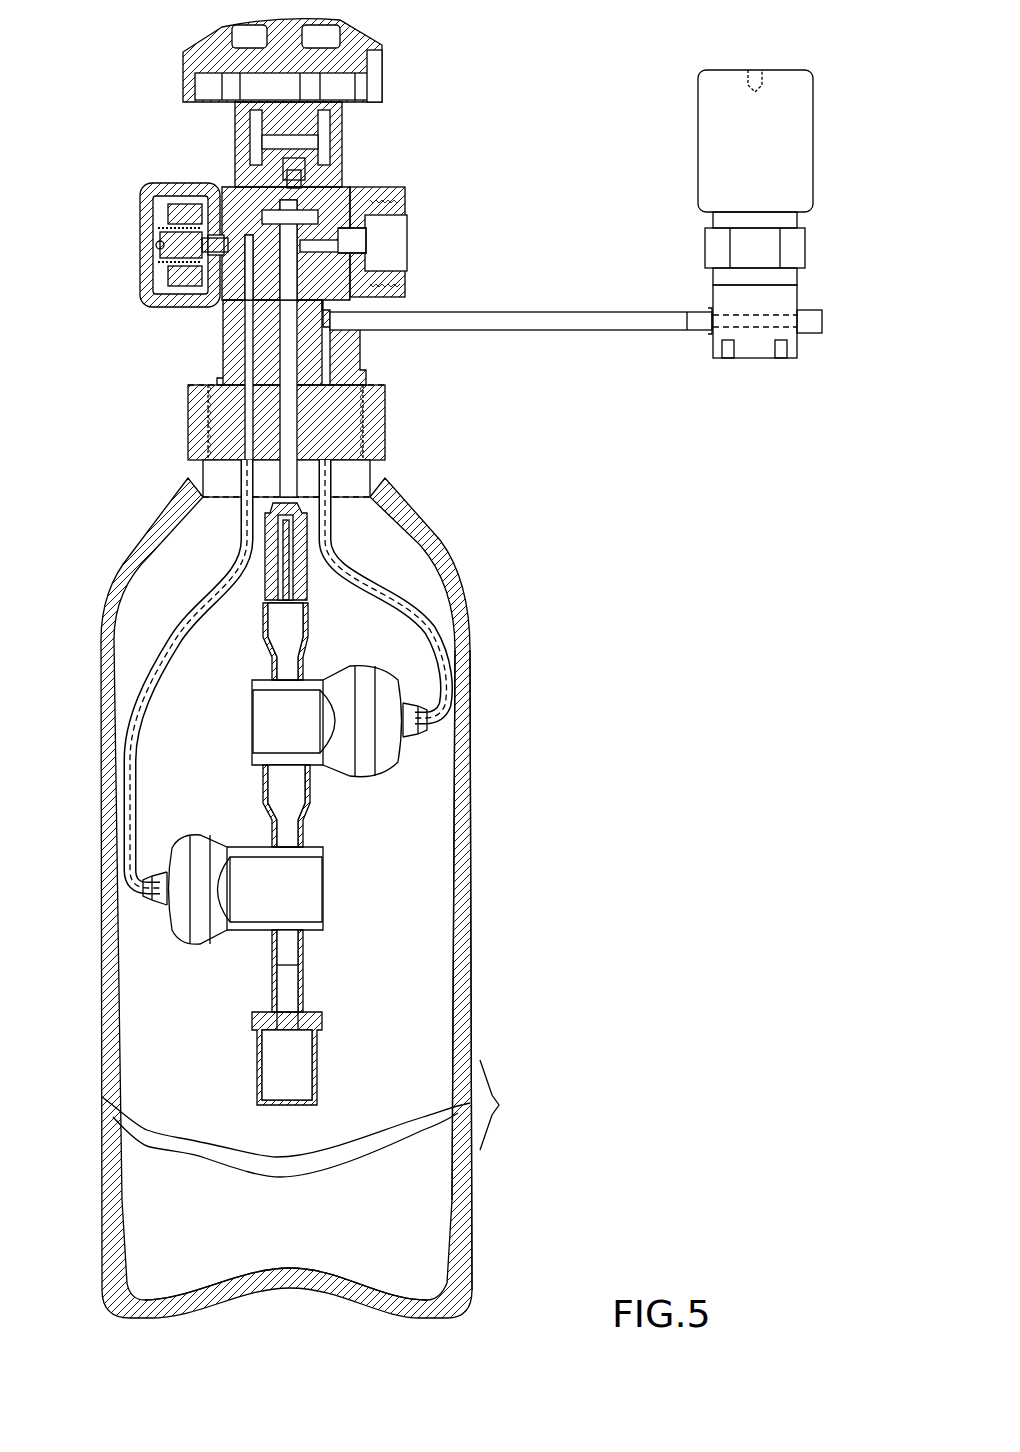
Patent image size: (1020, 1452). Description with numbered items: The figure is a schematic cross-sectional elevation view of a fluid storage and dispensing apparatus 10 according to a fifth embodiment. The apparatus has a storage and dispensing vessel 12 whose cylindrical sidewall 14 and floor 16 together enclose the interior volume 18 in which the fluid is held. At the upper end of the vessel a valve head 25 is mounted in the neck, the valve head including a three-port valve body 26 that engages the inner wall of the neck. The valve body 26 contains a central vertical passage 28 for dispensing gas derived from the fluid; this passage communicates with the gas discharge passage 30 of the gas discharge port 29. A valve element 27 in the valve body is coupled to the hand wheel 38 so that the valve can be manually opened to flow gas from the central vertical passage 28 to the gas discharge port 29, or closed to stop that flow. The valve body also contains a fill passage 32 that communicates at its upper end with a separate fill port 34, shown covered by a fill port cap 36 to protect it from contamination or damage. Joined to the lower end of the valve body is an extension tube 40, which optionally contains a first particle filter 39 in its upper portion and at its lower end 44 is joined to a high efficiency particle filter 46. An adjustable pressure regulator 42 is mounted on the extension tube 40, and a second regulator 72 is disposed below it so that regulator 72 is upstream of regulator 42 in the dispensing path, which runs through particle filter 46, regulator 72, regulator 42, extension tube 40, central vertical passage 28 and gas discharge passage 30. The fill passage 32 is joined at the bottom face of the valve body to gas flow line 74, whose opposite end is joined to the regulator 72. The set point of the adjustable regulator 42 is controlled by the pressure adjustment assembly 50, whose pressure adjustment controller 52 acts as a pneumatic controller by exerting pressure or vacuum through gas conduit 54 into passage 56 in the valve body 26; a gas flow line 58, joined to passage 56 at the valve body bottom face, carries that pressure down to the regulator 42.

The fluid storage and dispensing apparatus 10 is at (570, 719).
The storage and dispensing vessel 12 is at (471, 1266).
The cylindrical sidewall 14 is at (471, 952).
The floor 16 is at (248, 1290).
The interior volume 18 is at (300, 1233).
The valve head 25 is at (133, 86).
The valve body 26 is at (340, 196).
The valve element 27 is at (305, 165).
The central vertical passage 28 is at (292, 405).
The gas discharge port 29 is at (408, 258).
The gas discharge passage 30 is at (355, 235).
The fill passage 32 is at (248, 322).
The fill port 34 is at (142, 256).
The fill port cap 36 is at (188, 185).
The hand wheel 38 is at (200, 42).
The first particle filter 39 is at (283, 578).
The extension tube 40 is at (306, 624).
The adjustable pressure regulator 42 is at (268, 718).
The lower end of extension tube 44 is at (303, 955).
The high efficiency particle filter 46 is at (296, 1065).
The pressure adjustment assembly 50 is at (756, 180).
The pressure adjustment controller 52 is at (698, 162).
The gas conduit 54 is at (600, 322).
The passage 56 is at (332, 350).
The gas flow line 58 is at (438, 621).
The second regulator 72 is at (208, 845).
The gas flow line 74 is at (228, 584).